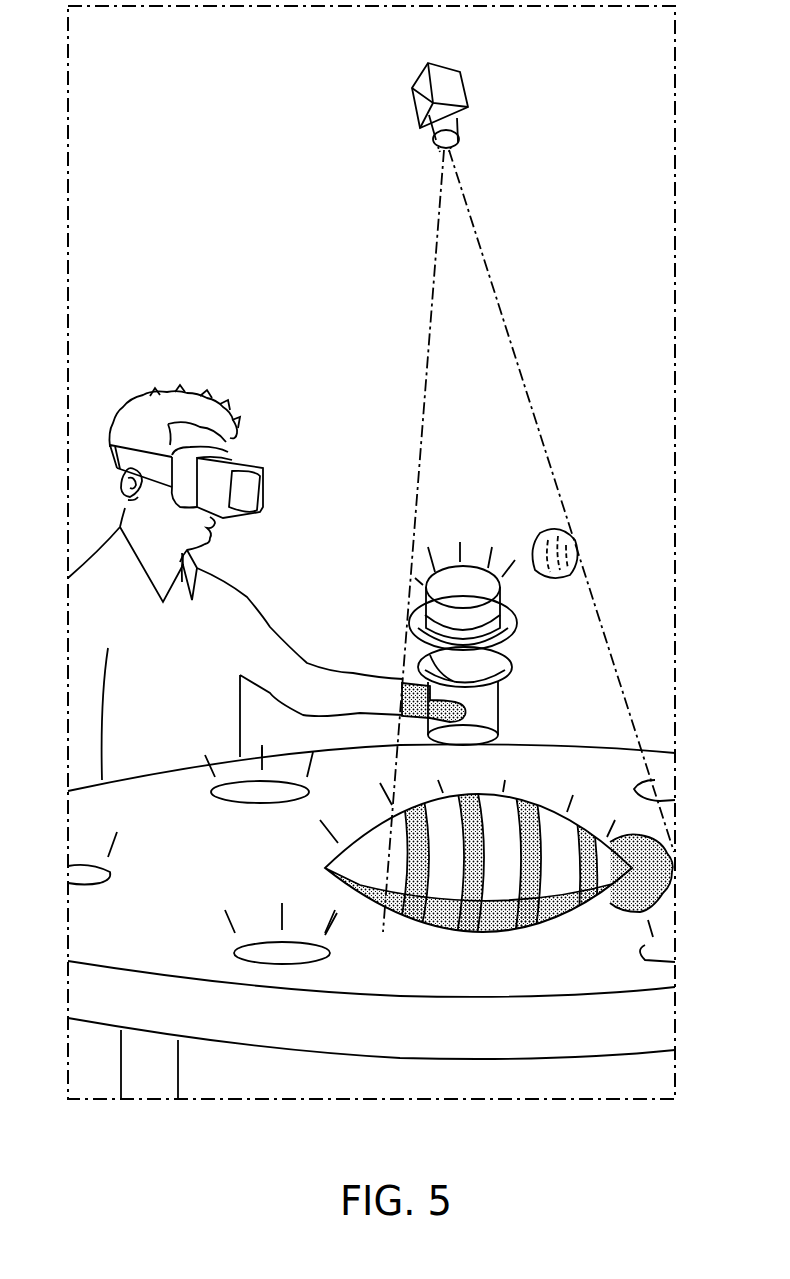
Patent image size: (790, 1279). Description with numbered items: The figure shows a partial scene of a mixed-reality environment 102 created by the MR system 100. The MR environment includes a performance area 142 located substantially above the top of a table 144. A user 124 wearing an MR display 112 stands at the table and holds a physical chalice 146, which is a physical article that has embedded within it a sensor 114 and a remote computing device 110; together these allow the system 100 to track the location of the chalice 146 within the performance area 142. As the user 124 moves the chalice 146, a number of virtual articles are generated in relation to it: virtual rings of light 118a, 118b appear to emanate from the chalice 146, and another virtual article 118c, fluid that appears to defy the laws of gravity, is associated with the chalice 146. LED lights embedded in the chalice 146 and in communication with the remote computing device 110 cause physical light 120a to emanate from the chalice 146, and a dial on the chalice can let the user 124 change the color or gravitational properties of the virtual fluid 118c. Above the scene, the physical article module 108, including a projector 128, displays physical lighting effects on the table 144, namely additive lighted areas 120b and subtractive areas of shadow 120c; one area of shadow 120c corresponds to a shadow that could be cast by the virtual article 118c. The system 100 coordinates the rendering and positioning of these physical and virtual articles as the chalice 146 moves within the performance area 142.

The MR system 100 is at (611, 312).
The MR environment 102 is at (552, 68).
The physical article module 108 is at (377, 101).
The remote computing device 110 is at (462, 658).
The MR display 112 is at (255, 492).
The sensor 114 is at (513, 702).
The virtual ring of light 118a is at (510, 675).
The virtual ring of light 118b is at (505, 640).
The virtual article 118c is at (536, 543).
The physical light 120a is at (438, 578).
The lighted areas 120b is at (240, 795).
The area of shadow 120c is at (382, 893).
The user 124 is at (140, 410).
The projector 128 is at (424, 102).
The performance area 142 is at (376, 374).
The table 144 is at (283, 846).
The physical chalice 146 is at (545, 617).